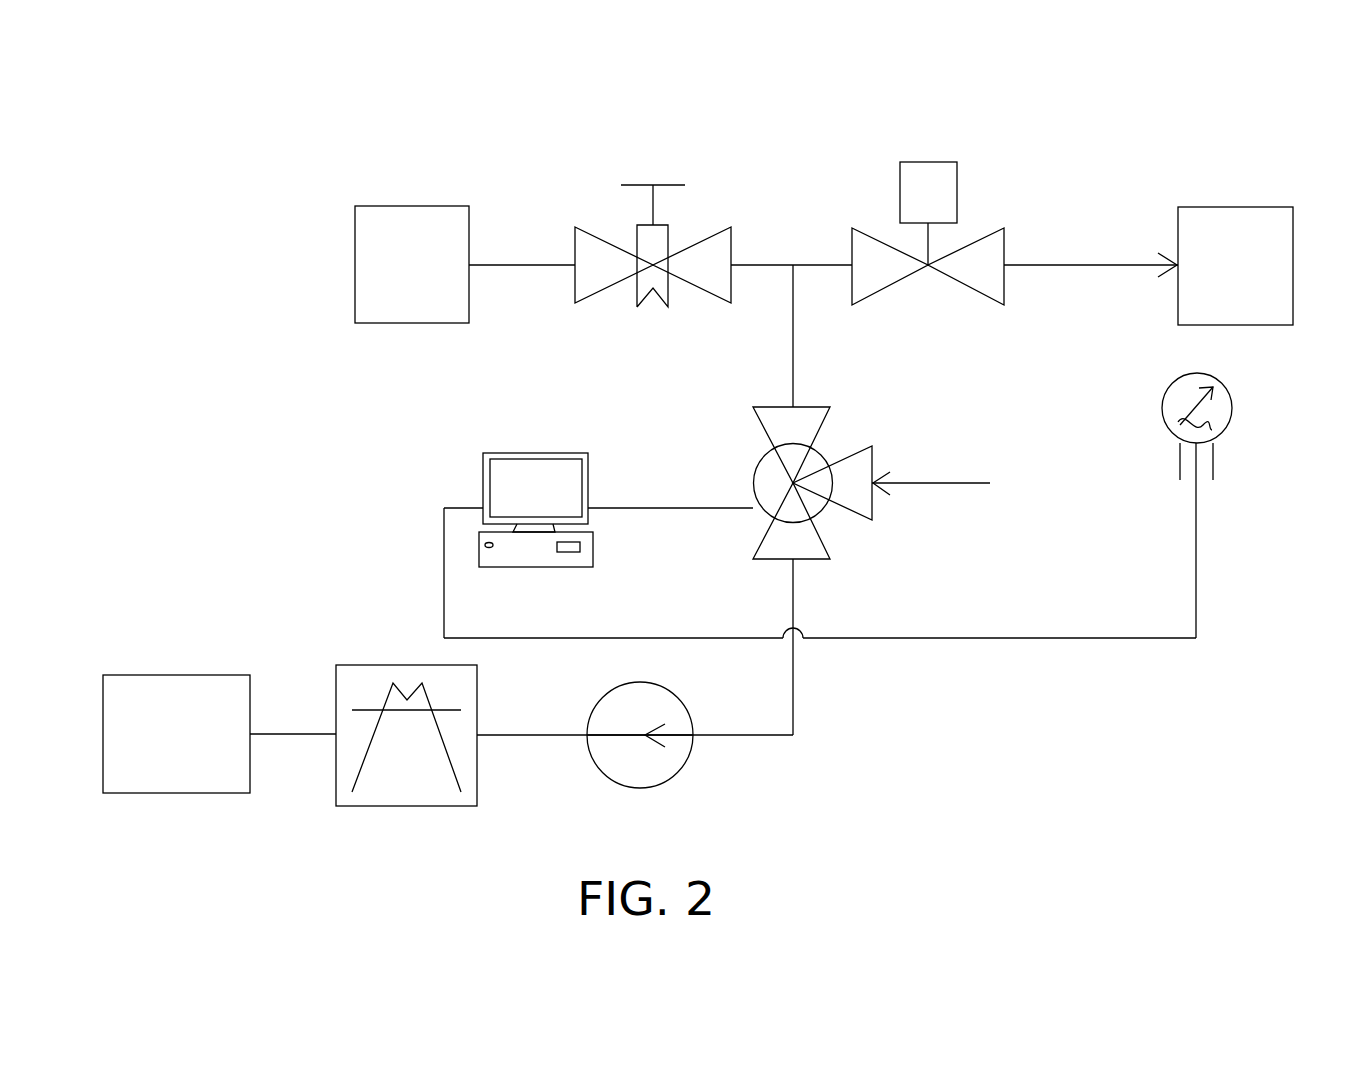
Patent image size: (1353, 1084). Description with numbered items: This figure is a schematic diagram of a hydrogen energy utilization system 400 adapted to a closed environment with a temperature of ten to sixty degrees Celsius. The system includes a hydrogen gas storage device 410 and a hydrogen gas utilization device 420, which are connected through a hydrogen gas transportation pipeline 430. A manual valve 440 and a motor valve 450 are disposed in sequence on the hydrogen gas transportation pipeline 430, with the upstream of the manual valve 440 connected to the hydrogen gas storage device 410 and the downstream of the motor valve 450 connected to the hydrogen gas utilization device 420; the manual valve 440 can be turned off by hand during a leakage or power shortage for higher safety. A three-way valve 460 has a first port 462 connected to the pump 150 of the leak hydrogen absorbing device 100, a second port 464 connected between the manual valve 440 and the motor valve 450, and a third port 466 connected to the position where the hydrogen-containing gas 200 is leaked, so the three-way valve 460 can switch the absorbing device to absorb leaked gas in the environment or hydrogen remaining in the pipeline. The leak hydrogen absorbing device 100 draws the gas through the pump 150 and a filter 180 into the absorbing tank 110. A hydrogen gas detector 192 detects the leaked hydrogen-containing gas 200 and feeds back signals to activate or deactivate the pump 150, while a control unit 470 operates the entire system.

The leak hydrogen absorbing device 100 is at (343, 617).
The absorbing tank 110 is at (187, 793).
The pump 150 is at (657, 788).
The filter 180 is at (405, 806).
The hydrogen gas detector 192 is at (1220, 413).
The hydrogen-containing gas 200 is at (954, 485).
The hydrogen energy utilization system 400 is at (1203, 828).
The hydrogen gas storage device 410 is at (407, 206).
The hydrogen gas utilization device 420 is at (1232, 207).
The hydrogen gas transportation pipeline 430 is at (1050, 265).
The manual valve 440 is at (658, 183).
The motor valve 450 is at (923, 160).
The three-way valve 460 is at (856, 464).
The first port 462 is at (807, 547).
The second port 464 is at (807, 417).
The third port 466 is at (860, 468).
The control unit 470 is at (535, 453).